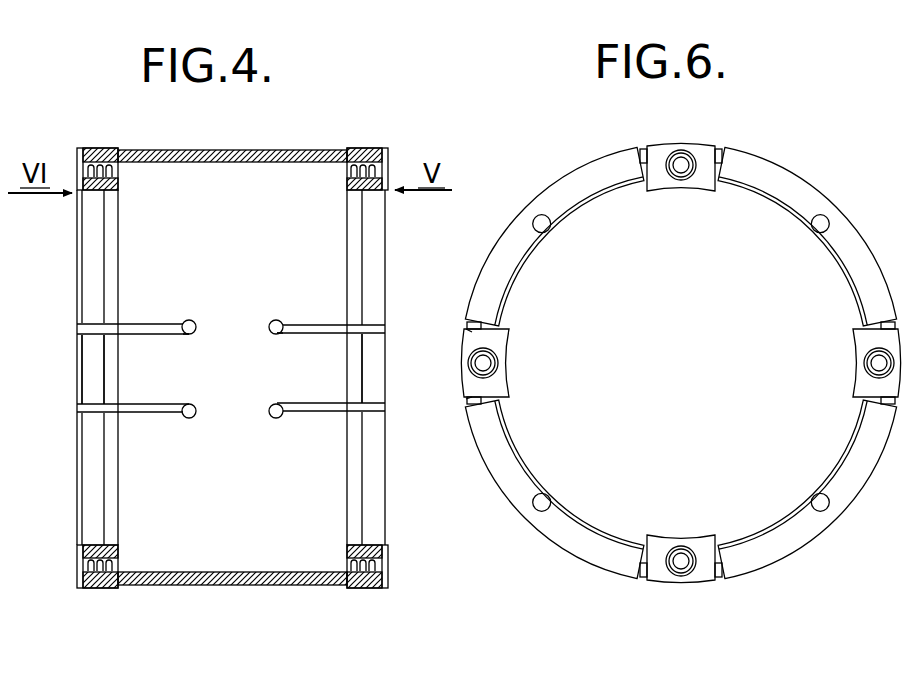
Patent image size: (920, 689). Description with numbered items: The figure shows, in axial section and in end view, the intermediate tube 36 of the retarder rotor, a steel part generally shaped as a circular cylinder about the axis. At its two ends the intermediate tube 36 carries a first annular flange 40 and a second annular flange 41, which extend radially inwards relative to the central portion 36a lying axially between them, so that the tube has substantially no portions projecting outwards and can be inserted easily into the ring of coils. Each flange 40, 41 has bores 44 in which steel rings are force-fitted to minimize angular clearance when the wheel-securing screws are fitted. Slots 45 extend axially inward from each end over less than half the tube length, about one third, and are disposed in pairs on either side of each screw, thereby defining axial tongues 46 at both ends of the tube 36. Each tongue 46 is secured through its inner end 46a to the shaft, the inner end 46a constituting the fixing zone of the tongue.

In FIG. 4, the intermediate tube 36 is at (260, 148).
In FIG. 6, the intermediate tube 36 is at (784, 153).
In FIG. 4, the central portion 36a is at (263, 580).
In FIG. 4, the first annular flange 40 is at (113, 550).
In FIG. 6, the first annular flange 40 is at (583, 540).
In FIG. 4, the second annular flange 41 is at (348, 543).
In FIG. 4, the bore 44 is at (75, 577).
In FIG. 6, the bore 44 is at (692, 574).
In FIG. 4, the slot 45 is at (0, 337).
In FIG. 6, the slot 45 is at (465, 399).
In FIG. 4, the axial tongue 46 is at (130, 378).
In FIG. 6, the axial tongue 46 is at (700, 170).
In FIG. 4, the inner end 46a is at (285, 387).